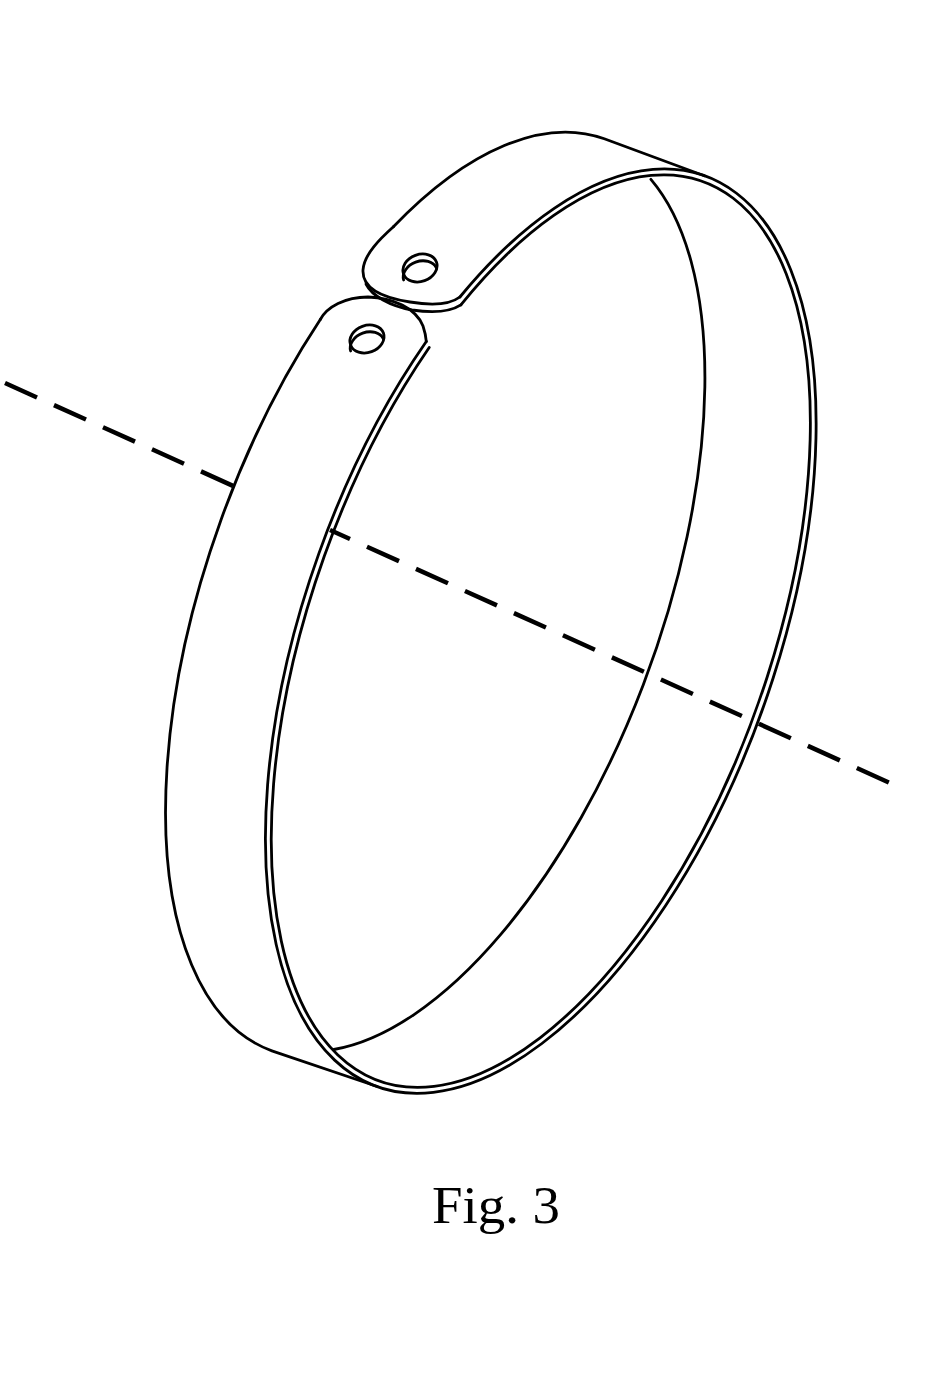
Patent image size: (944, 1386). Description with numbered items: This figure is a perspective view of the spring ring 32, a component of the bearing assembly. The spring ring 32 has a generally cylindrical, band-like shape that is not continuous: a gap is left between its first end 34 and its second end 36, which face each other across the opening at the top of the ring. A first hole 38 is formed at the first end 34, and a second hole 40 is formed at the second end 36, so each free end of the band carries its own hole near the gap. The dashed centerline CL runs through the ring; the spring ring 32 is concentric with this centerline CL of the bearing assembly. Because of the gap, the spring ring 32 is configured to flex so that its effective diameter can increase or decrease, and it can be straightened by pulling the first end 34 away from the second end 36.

The spring ring 32 is at (458, 592).
The first end 34 is at (362, 202).
The second end 36 is at (284, 358).
The first hole 38 is at (430, 252).
The second hole 40 is at (350, 354).
The centerline CL is at (830, 748).